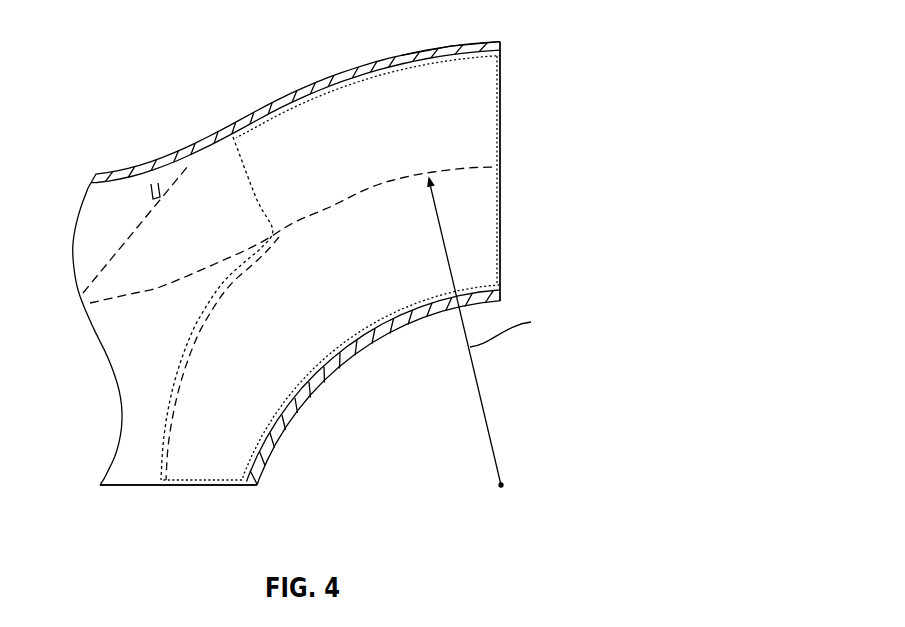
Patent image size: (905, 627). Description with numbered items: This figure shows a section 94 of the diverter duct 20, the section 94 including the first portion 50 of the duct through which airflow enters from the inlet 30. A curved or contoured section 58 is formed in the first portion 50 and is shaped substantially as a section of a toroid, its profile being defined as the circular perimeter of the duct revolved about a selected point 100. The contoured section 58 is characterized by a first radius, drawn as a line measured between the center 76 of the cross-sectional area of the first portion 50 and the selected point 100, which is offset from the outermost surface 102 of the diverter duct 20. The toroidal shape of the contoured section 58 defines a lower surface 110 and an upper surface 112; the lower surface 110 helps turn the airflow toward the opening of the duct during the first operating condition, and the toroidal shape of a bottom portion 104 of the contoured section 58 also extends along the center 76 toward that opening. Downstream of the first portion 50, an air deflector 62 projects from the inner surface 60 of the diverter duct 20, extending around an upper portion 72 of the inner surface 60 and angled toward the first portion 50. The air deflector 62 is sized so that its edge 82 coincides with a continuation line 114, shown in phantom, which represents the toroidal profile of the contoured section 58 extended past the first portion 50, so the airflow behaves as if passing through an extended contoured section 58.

The diverter duct 20 is at (504, 20).
The inlet 30 is at (503, 85).
The first portion 50 is at (357, 170).
The contoured section 58 is at (186, 170).
The inner surface 60 is at (423, 57).
The air deflector 62 is at (138, 190).
The upper portion 72 is at (259, 135).
The center 76 is at (372, 190).
The edge 82 is at (155, 200).
The section 94 is at (303, 78).
The selected point 100 is at (503, 484).
The outermost surface 102 is at (303, 407).
The bottom portion 104 is at (227, 435).
The lower surface 110 is at (410, 308).
The upper surface 112 is at (363, 78).
The continuation line 114 is at (129, 230).